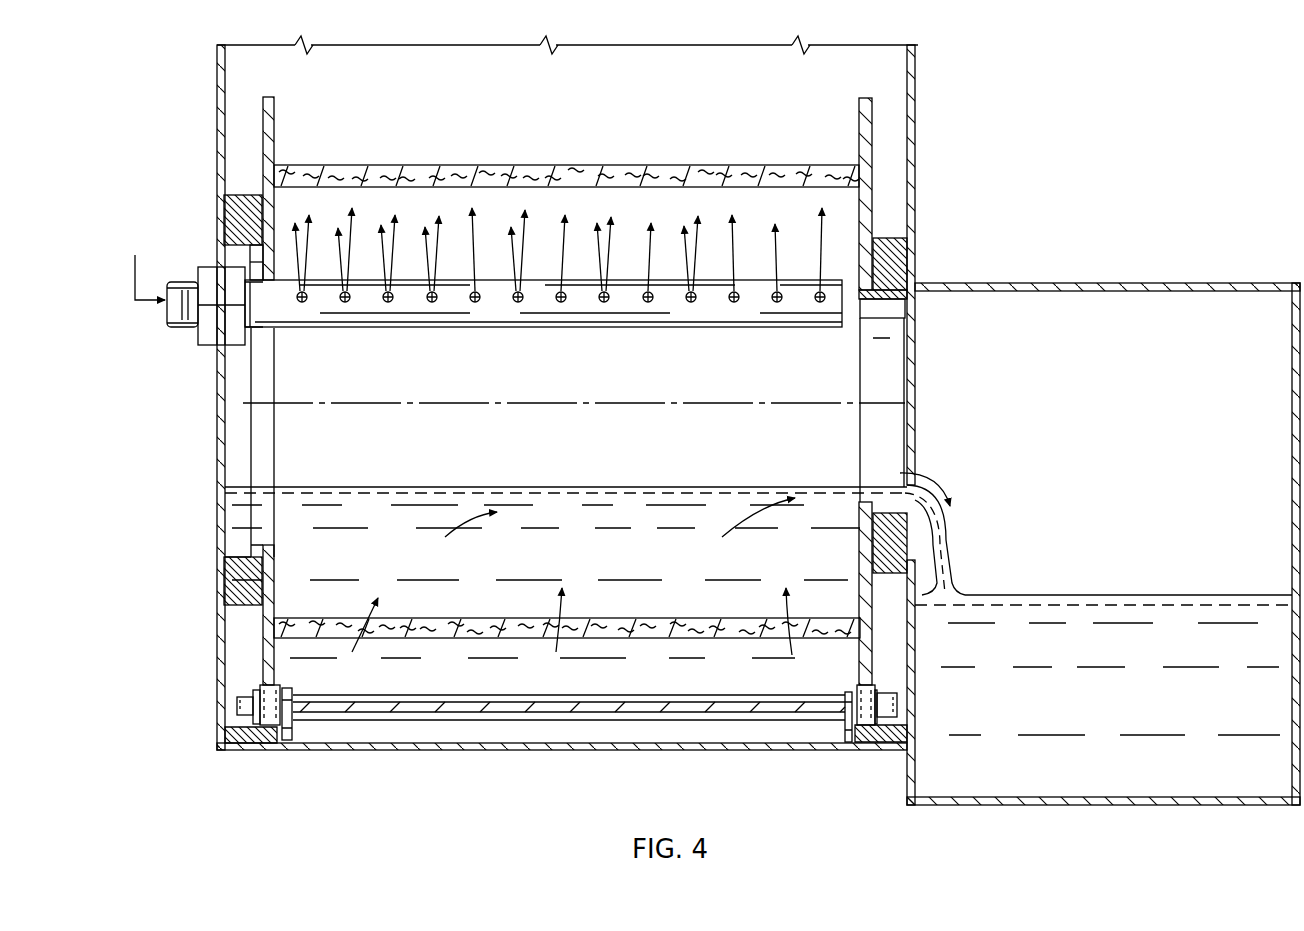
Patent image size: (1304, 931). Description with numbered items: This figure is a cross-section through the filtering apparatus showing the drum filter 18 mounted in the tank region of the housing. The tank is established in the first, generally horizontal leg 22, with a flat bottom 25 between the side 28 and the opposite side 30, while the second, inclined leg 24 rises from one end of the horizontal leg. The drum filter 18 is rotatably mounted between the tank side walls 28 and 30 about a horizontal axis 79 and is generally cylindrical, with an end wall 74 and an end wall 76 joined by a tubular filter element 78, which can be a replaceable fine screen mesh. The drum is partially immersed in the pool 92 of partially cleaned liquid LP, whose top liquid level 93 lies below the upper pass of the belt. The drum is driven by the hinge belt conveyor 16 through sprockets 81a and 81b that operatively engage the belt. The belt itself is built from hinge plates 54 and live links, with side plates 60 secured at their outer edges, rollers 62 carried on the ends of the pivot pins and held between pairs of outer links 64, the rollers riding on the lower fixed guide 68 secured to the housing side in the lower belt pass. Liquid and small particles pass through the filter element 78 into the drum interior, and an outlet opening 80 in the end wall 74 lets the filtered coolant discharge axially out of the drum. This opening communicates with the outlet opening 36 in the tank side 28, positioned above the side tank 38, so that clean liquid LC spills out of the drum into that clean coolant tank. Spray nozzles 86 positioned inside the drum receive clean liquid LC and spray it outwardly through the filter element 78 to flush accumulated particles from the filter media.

The hinge belt conveyor 16 is at (398, 727).
The drum filter 18 is at (537, 164).
The first, generally horizontal leg 22 is at (217, 656).
The second, inclined leg 24 is at (916, 63).
The flat bottom 25 is at (442, 750).
The side 28 is at (914, 204).
The side 30 is at (218, 495).
The outlet opening 36 is at (914, 407).
The side tank 38 is at (1232, 283).
The hinge plates 54 is at (643, 712).
The side plates 60 is at (290, 731).
The rollers 62 is at (268, 722).
The outer links 64 is at (222, 745).
The lower fixed guide 68 is at (247, 720).
The end wall 74 is at (867, 150).
The end wall 76 is at (270, 166).
The tubular filter element 78 is at (650, 170).
The horizontal axis 79 is at (562, 405).
The outlet opening 80 is at (893, 336).
The sprocket 81a is at (275, 112).
The sprocket 81b is at (868, 112).
The spray nozzles 86 is at (476, 304).
The pool 92 is at (708, 678).
The top liquid level 93 is at (620, 487).
The clean liquid LC is at (138, 278).
The partially cleaned liquid LP is at (560, 678).